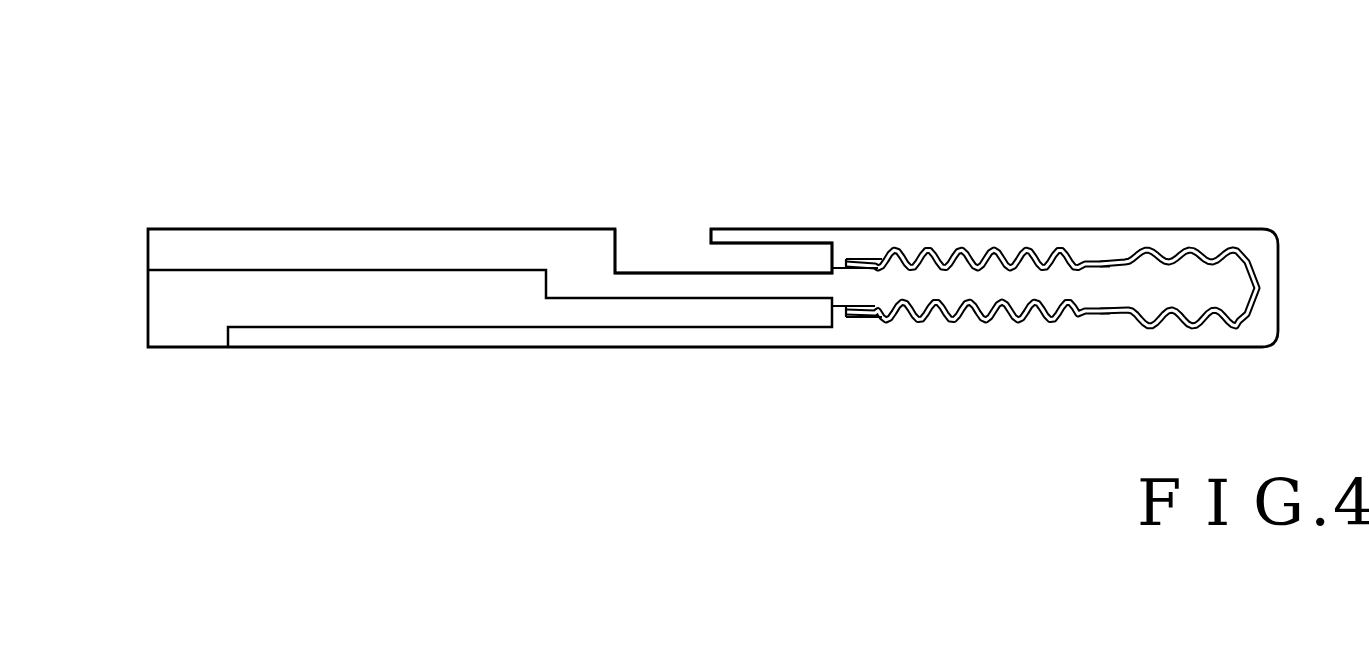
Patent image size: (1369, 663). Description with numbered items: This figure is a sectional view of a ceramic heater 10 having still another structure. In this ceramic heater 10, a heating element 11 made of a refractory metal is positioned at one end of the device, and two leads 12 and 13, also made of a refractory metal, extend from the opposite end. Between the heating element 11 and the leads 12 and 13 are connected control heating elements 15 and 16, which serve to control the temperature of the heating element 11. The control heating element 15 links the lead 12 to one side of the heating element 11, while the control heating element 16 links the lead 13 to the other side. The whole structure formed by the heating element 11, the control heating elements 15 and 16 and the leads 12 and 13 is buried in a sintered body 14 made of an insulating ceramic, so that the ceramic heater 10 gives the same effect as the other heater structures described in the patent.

The ceramic heater 10 is at (810, 146).
The heating element 11 is at (1248, 268).
The lead 12 is at (675, 246).
The lead 13 is at (450, 315).
The sintered body 14 is at (465, 240).
The control heating element 15 is at (1000, 263).
The control heating element 16 is at (972, 322).